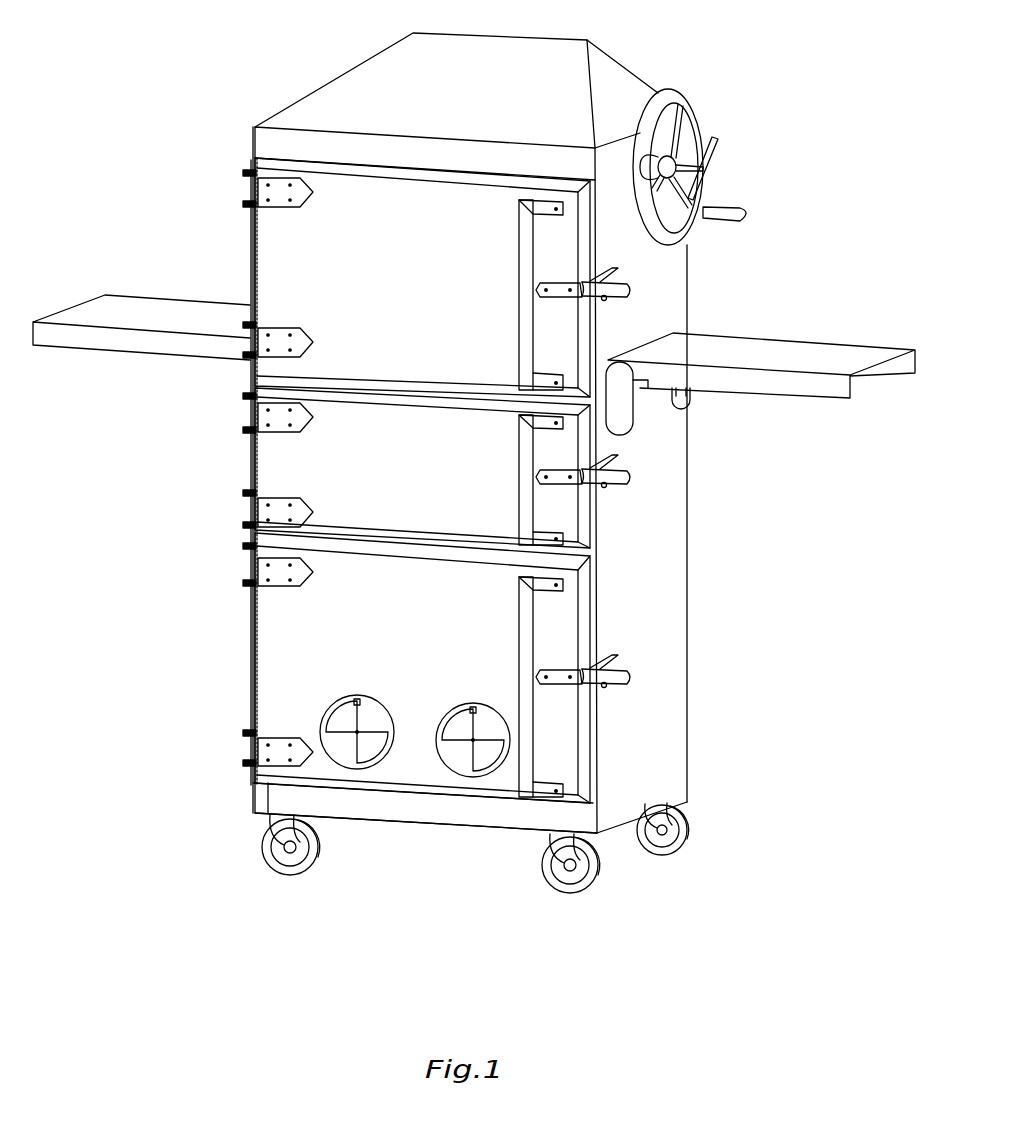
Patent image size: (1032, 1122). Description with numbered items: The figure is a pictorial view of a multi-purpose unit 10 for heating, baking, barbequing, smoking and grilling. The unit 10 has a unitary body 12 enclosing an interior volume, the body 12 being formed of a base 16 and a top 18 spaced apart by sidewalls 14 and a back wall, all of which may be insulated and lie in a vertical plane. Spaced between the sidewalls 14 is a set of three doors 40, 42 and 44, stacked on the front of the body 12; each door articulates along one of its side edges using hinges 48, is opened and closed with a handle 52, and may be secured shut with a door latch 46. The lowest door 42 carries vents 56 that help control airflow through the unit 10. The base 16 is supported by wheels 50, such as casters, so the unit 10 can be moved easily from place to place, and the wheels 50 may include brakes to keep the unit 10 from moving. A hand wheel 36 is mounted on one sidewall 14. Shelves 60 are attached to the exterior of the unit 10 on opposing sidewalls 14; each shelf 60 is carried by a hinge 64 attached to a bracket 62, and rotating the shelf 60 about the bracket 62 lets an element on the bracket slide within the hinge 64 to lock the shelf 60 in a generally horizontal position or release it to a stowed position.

The multi-purpose unit 10 is at (196, 11).
The unitary body 12 is at (268, 138).
The sidewalls 14 is at (652, 528).
The base 16 is at (440, 826).
The top 18 is at (360, 78).
The hand wheel 36 is at (712, 94).
The door 40 is at (276, 259).
The door 42 is at (276, 618).
The door 44 is at (276, 456).
The door latch 46 is at (630, 287).
The hinge 48 is at (312, 198).
The wheels 50 is at (265, 853).
The handle 52 is at (517, 262).
The vent 56 is at (325, 705).
The shelf 60 is at (106, 300).
The bracket 62 is at (628, 424).
The hinge 64 is at (697, 404).